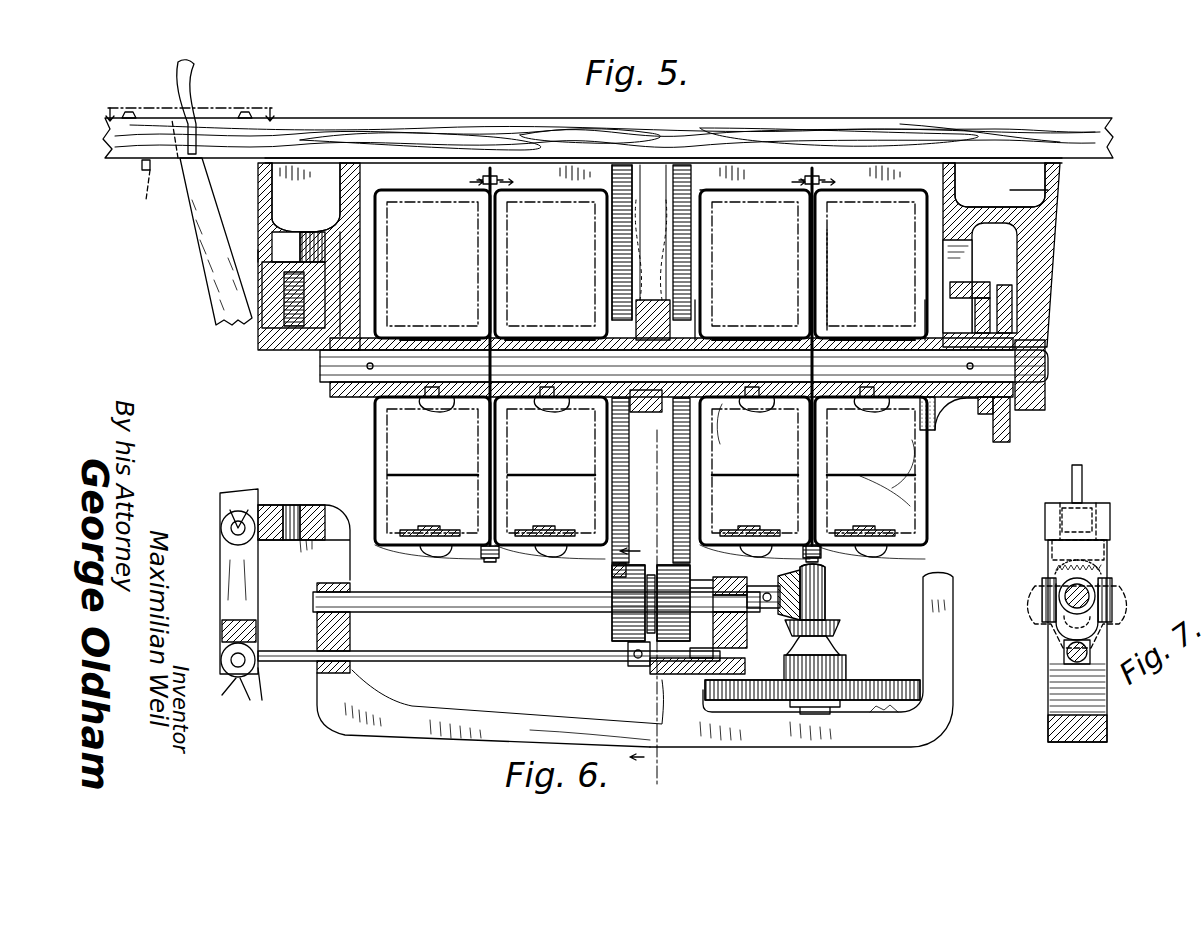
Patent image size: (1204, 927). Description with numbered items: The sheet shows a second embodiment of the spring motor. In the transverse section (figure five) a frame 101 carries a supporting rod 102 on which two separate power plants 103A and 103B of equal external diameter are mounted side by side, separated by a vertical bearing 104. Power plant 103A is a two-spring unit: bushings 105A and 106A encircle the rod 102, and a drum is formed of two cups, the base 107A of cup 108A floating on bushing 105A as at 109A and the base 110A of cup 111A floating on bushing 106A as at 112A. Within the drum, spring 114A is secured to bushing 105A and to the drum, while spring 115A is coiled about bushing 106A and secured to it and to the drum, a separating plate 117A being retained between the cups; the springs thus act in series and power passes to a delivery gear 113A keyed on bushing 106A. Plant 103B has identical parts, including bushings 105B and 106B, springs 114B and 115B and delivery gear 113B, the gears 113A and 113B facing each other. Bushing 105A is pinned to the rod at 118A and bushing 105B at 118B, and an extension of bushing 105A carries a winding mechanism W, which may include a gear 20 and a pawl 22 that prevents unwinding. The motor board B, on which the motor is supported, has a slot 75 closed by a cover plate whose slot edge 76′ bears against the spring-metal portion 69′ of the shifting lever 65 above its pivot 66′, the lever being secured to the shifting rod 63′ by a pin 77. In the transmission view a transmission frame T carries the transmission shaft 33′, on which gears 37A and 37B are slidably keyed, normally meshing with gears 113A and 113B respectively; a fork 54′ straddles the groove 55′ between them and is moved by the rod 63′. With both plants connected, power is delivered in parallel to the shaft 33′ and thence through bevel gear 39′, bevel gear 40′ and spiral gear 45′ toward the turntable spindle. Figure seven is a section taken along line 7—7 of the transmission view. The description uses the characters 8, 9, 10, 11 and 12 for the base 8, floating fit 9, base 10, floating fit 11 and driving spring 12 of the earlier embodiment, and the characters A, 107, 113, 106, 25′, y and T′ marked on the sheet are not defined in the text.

In FIG. 5, the driving spring 12 is at (192, 101).
In FIG. 5, the slot edge 76' is at (211, 107).
In FIG. 5, the slot in motor board 75 is at (143, 188).
In FIG. 5, the spring-metal lever portion 69' is at (206, 222).
In FIG. 5, the motor board B is at (1000, 118).
In FIG. 5, the power plant 103B is at (452, 210).
In FIG. 5, the power delivery gear 113B is at (628, 178).
In FIG. 5, the power delivery gear 113A is at (696, 180).
In FIG. 5, the power plant 103A is at (845, 210).
In FIG. 5, the floating fit 11 is at (473, 556).
In FIG. 5, the cup base 10 is at (507, 556).
In FIG. 5, the cup 111A is at (760, 188).
In FIG. 5, the floating fit 9 is at (798, 556).
In FIG. 5, the cup base 8 is at (830, 556).
In FIG. 5, the frame part A is at (1012, 242).
In FIG. 5, the frame 101 is at (1050, 246).
In FIG. 5, the bearing block 107 is at (960, 268).
In FIG. 5, the winding mechanism W is at (1004, 297).
In FIG. 5, the cup base 110A is at (706, 258).
In FIG. 5, the coil spring 114A is at (942, 517).
In FIG. 5, the bushing 105B is at (416, 340).
In FIG. 5, the bushing 106B is at (536, 340).
In FIG. 5, the floating fit 112A is at (700, 320).
In FIG. 5, the bushing 106A is at (756, 338).
In FIG. 5, the bushing 105A is at (858, 338).
In FIG. 5, the floating fit 109A is at (923, 340).
In FIG. 5, the pin 118A is at (1085, 334).
In FIG. 5, the pin 118B is at (325, 375).
In FIG. 5, the supporting rod 102 is at (1050, 360).
In FIG. 5, the vertical bearing 104 is at (655, 415).
In FIG. 5, the coil spring 114B is at (428, 472).
In FIG. 5, the coil spring 115B is at (548, 472).
In FIG. 5, the pawl 22 is at (980, 420).
In FIG. 5, the cup base 107A is at (930, 446).
In FIG. 5, the winding gear 20 is at (1010, 430).
In FIG. 5, the coil spring 115A is at (760, 485).
In FIG. 5, the separating plate 117A is at (815, 462).
In FIG. 5, the cup 108A is at (925, 545).
In FIG. 5, the nut 113 is at (822, 556).
In FIG. 6, the lever pivot 66' is at (220, 527).
In FIG. 7, the lever pivot 66' is at (1067, 502).
In FIG. 6, the shifting lever 65 is at (222, 570).
In FIG. 7, the shifting lever 65 is at (1050, 546).
In FIG. 6, the pin 77 is at (240, 682).
In FIG. 6, the transmission shaft 33' is at (509, 558).
In FIG. 6, the shifting rod 63' is at (489, 688).
In FIG. 7, the shifting rod 63' is at (1045, 655).
In FIG. 6, the transmission frame T is at (635, 678).
In FIG. 6, the frame bottom 25' is at (668, 756).
In FIG. 6, the section line 7— 7 is at (646, 612).
In FIG. 6, the groove 55' is at (593, 564).
In FIG. 7, the groove 55' is at (1058, 613).
In FIG. 6, the gear 37B is at (612, 628).
In FIG. 7, the gear 37B is at (1052, 572).
In FIG. 6, the shifting fork 54' is at (665, 572).
In FIG. 7, the shifting fork 54' is at (1045, 612).
In FIG. 6, the direction arrow y is at (639, 541).
In FIG. 6, the gear 37A is at (655, 664).
In FIG. 6, the bearing 106 is at (704, 592).
In FIG. 6, the bevel gear 39' is at (775, 586).
In FIG. 6, the bevel gear 40' is at (830, 622).
In FIG. 6, the spiral gear 45' is at (812, 679).
In FIG. 7, the frame section T' is at (1077, 656).